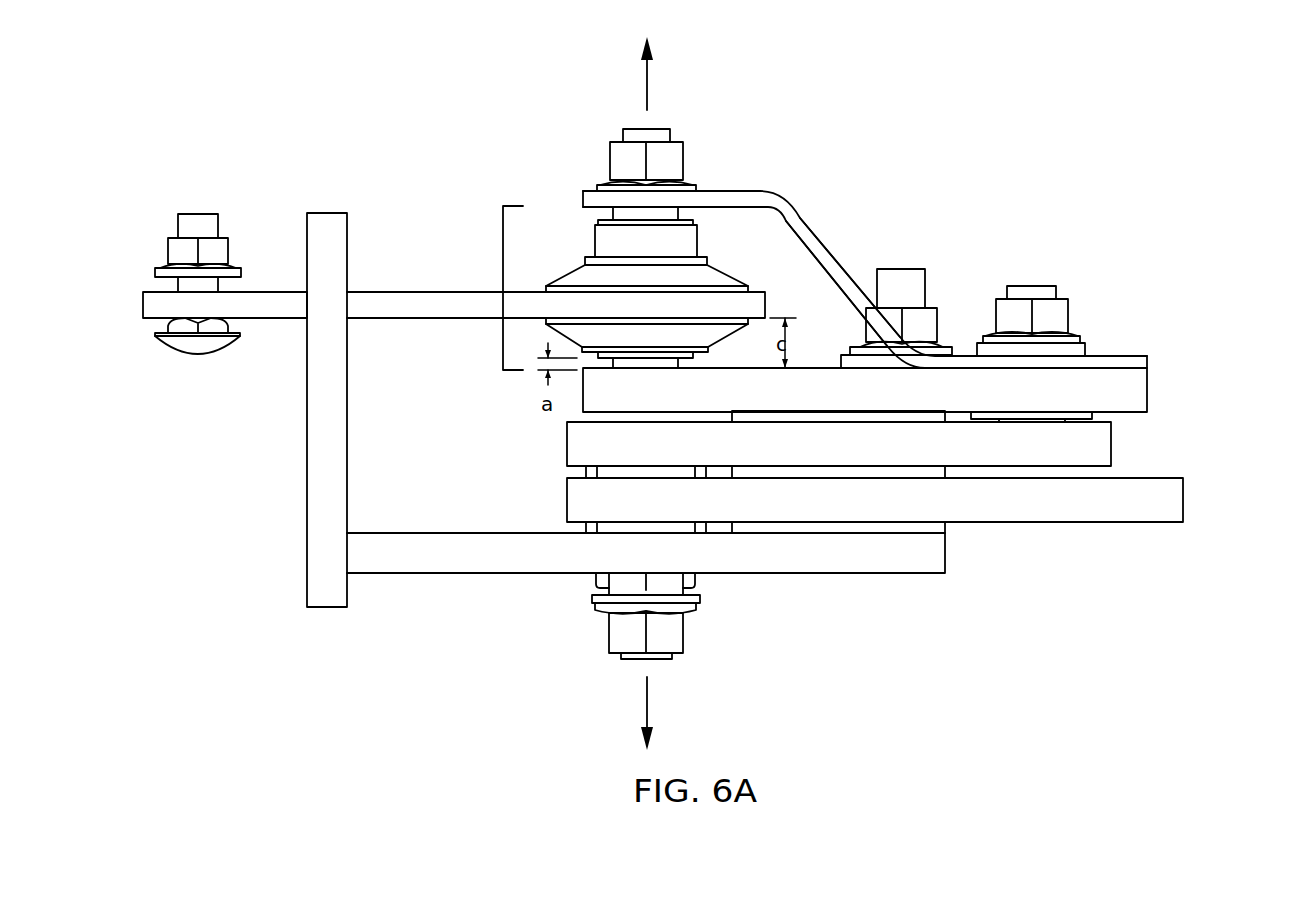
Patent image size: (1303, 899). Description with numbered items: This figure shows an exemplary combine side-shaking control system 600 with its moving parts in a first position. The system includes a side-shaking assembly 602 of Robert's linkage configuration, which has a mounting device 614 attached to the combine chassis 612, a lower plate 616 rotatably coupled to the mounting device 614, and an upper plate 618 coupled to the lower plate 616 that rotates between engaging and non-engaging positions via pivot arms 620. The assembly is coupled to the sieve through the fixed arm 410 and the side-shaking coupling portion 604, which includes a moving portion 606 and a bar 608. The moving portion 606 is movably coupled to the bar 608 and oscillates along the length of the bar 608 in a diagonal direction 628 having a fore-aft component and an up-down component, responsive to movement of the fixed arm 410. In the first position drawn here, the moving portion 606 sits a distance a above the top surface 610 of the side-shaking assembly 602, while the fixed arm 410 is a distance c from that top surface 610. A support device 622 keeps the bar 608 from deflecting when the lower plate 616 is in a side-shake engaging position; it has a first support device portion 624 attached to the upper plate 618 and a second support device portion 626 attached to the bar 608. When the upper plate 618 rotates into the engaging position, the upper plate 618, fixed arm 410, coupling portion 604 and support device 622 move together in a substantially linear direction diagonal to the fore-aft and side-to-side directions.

The side-shaking control system 600 is at (250, 85).
The fixed arm 410 is at (375, 291).
The combine chassis 612 is at (325, 228).
The side-shaking coupling portion 604 is at (503, 283).
The second support device portion 626 is at (593, 200).
The bar 608 is at (660, 212).
The moving portion 606 is at (865, 256).
The support device 622 is at (823, 252).
The top surface 610 is at (815, 368).
The first support device portion 624 is at (1112, 363).
The upper plate 618 is at (1121, 391).
The pivot arms 620 is at (1111, 443).
The lower plate 616 is at (1111, 510).
The mounting device 614 is at (865, 562).
The side-shaking assembly 602 is at (815, 507).
The diagonal direction 628 is at (642, 92).